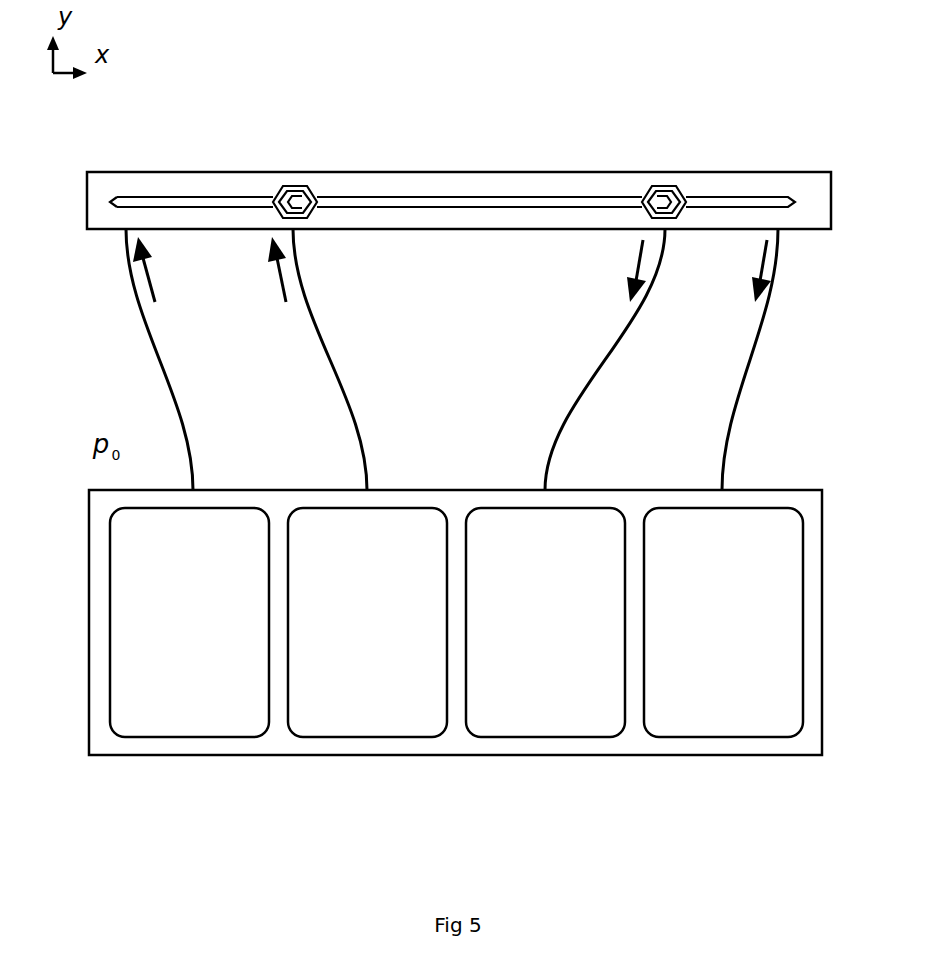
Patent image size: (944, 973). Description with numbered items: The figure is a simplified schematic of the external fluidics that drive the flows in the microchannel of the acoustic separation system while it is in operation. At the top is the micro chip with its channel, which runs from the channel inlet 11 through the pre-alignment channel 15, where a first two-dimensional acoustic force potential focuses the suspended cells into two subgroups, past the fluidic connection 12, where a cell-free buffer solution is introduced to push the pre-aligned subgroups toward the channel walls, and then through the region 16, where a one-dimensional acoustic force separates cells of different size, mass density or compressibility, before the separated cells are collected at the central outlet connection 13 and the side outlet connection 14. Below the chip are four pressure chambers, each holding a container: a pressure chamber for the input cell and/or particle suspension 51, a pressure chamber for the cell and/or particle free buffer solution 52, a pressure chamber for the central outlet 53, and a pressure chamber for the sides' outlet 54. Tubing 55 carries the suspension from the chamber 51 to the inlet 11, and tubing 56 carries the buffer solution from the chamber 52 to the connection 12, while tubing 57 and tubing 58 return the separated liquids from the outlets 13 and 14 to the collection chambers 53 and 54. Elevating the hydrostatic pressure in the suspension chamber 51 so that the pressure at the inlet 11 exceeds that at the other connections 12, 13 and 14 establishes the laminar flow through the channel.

The channel inlet 11 is at (127, 202).
The fluidic connection for cell-free solution 12 is at (293, 200).
The central outlet connection 13 is at (666, 201).
The side outlet connection 14 is at (781, 201).
The pre-alignment channel 15 is at (205, 202).
The separation channel with one-dimensional acoustic force 16 is at (445, 200).
The pressure chamber for input cell and/or particle suspension 51 is at (203, 692).
The pressure chamber for cell and/or particle free buffer solution 52 is at (380, 692).
The pressure chamber for the central outlet 53 is at (560, 692).
The pressure chamber for the sides' outlet 54 is at (738, 692).
The tubing 55 is at (183, 407).
The tubing 56 is at (347, 398).
The tubing 57 is at (571, 407).
The tubing 58 is at (731, 400).